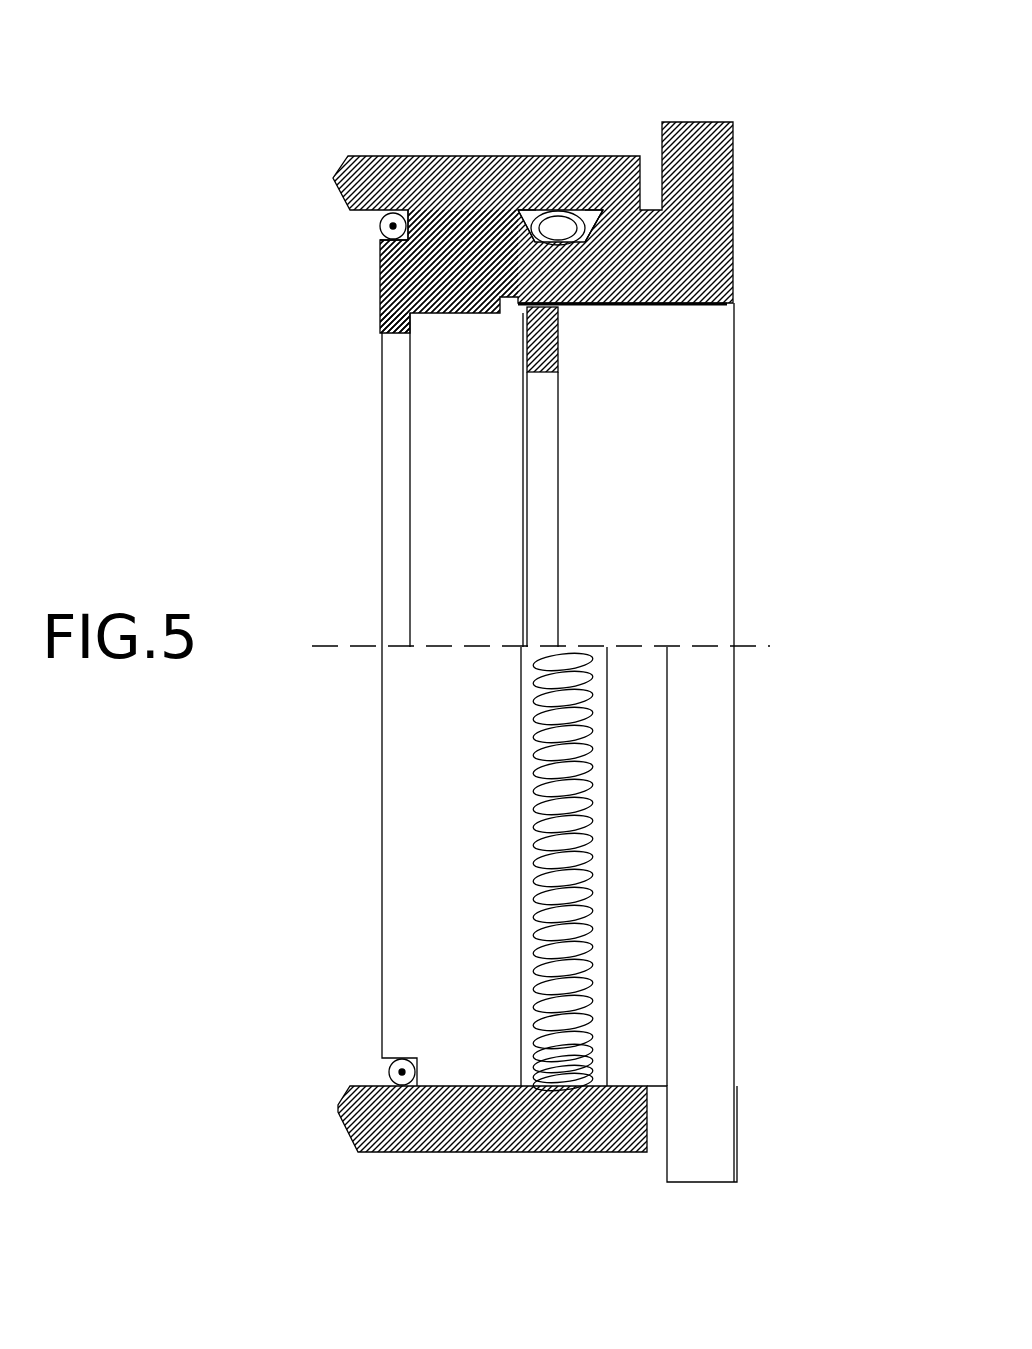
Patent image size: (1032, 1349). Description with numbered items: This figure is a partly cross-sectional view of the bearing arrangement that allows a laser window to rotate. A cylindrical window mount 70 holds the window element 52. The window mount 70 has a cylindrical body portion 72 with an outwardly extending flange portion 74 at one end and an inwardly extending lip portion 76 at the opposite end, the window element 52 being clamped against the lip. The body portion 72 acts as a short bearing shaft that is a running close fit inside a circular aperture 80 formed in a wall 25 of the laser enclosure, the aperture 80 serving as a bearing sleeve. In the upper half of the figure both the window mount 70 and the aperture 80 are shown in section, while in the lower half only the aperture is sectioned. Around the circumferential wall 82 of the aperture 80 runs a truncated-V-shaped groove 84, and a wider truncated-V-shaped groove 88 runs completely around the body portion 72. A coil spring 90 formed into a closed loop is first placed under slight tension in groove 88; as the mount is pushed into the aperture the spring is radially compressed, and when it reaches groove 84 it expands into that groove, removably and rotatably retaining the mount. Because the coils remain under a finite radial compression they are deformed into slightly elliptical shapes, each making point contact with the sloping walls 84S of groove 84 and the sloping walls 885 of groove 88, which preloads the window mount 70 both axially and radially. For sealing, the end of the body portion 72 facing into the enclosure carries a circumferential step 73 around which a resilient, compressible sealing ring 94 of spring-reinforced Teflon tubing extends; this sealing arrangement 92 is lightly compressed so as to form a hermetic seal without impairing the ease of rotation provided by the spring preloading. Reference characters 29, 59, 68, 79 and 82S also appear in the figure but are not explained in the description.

The wall 25 is at (408, 178).
The chamber 29 is at (506, 580).
The window element 52 is at (442, 425).
The seal groove 59 is at (370, 222).
The spring housing 68 is at (614, 822).
The cylindrical window mount 70 is at (748, 232).
The cylindrical body portion 72 is at (475, 235).
The circumferential step 73 is at (380, 265).
The outwardly extending flange portion 74 is at (715, 148).
The inwardly extending lip portion 76 is at (387, 330).
The guide sleeve 79 is at (562, 340).
The circular aperture 80 is at (370, 703).
The circumferential wall 82 is at (510, 212).
The seat surface edge 82S is at (590, 205).
The truncated-V-shaped groove 84 is at (578, 180).
The sloping walls 84S is at (533, 212).
The groove 88 is at (604, 246).
The sloping walls 885 is at (522, 232).
The coil spring 90 is at (604, 718).
The sealing arrangement 92 is at (350, 231).
The sealing ring 94 is at (390, 1070).